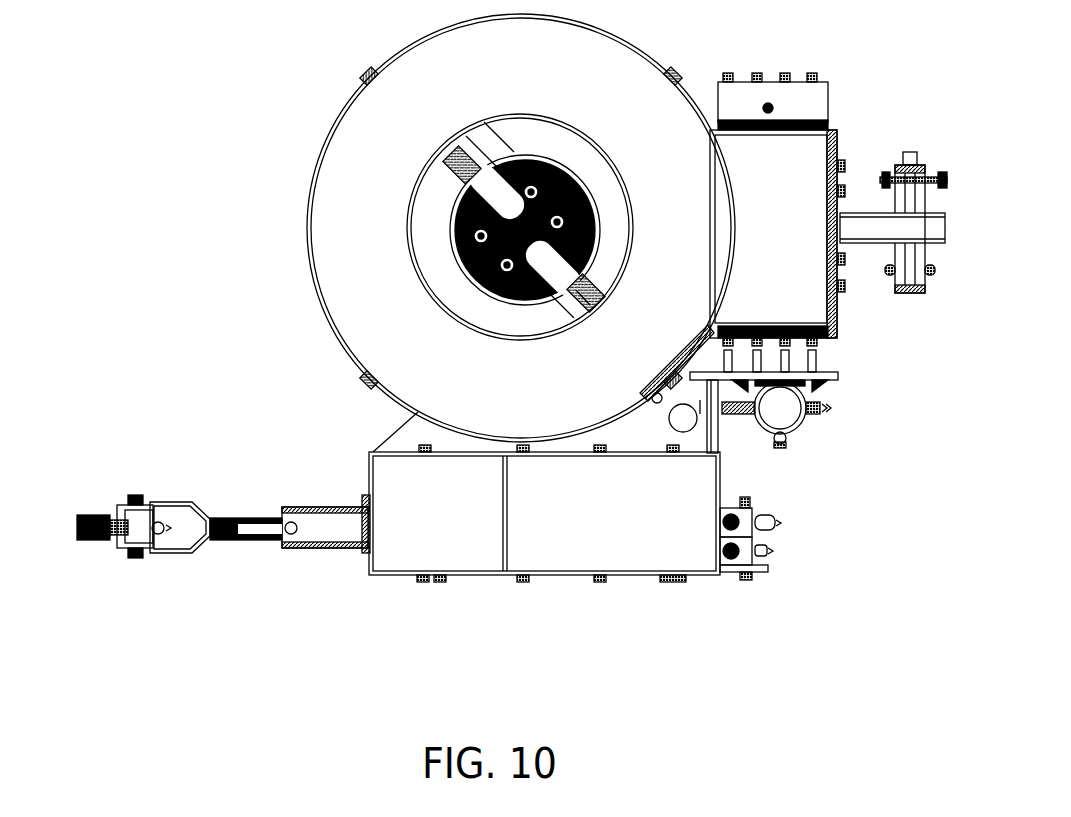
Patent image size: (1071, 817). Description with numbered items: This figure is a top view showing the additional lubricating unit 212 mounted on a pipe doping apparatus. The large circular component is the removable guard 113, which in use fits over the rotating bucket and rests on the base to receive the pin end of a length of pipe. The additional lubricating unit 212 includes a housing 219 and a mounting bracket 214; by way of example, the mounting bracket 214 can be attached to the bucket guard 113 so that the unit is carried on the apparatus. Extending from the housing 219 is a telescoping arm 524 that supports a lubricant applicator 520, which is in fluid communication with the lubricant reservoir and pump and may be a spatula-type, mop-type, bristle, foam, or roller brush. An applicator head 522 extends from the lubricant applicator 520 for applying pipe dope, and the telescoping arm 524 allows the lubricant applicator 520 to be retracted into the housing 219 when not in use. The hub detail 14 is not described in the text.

The hub / wheel connector 14 is at (524, 229).
The removable guard 113 is at (500, 228).
The additional lubricating unit 212 is at (243, 471).
The mounting bracket 214 is at (720, 428).
The housing 219 is at (397, 578).
The lubricant applicator 520 is at (120, 522).
The applicator head 522 is at (105, 540).
The telescoping arm 524 is at (325, 505).